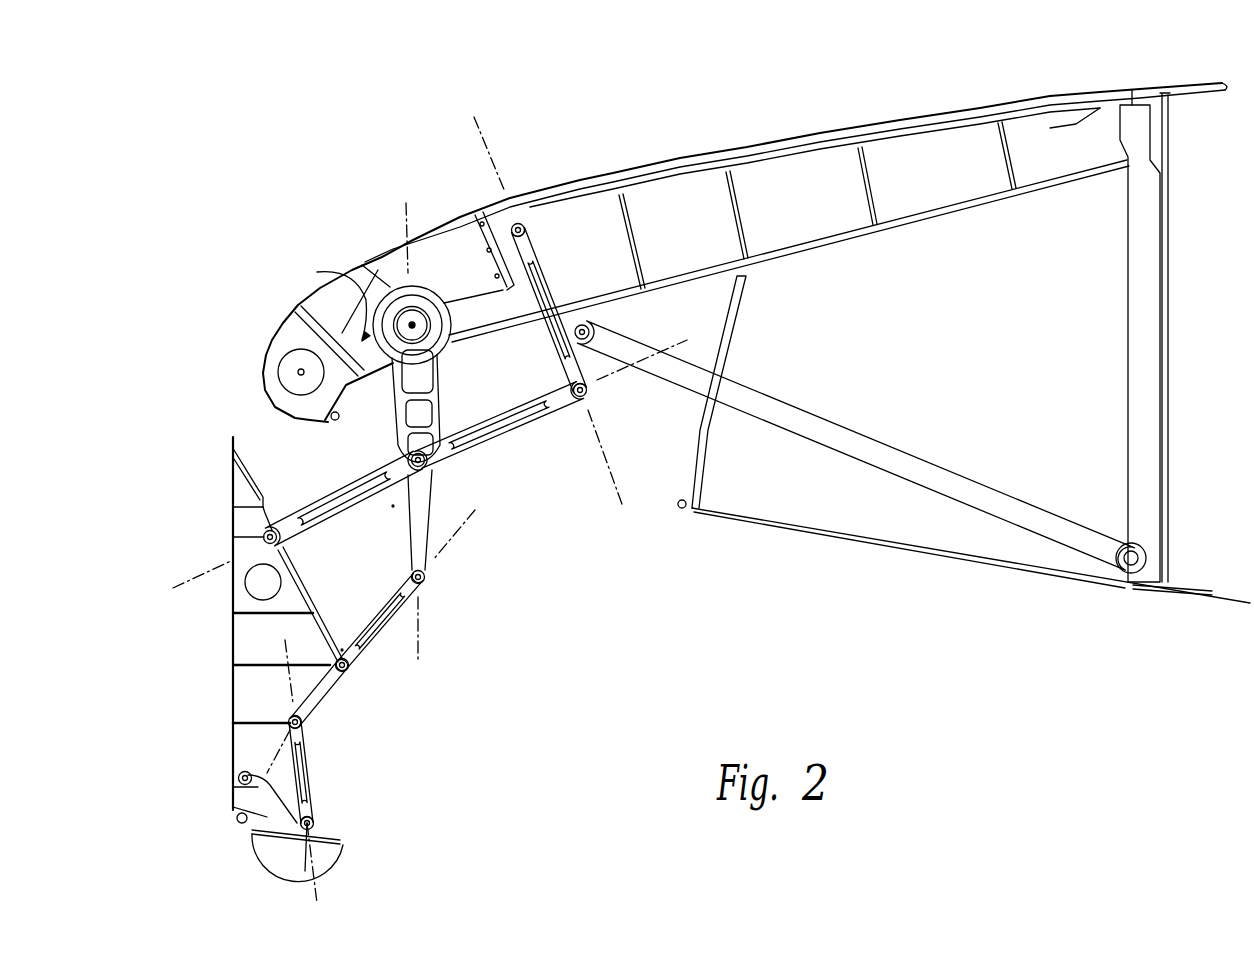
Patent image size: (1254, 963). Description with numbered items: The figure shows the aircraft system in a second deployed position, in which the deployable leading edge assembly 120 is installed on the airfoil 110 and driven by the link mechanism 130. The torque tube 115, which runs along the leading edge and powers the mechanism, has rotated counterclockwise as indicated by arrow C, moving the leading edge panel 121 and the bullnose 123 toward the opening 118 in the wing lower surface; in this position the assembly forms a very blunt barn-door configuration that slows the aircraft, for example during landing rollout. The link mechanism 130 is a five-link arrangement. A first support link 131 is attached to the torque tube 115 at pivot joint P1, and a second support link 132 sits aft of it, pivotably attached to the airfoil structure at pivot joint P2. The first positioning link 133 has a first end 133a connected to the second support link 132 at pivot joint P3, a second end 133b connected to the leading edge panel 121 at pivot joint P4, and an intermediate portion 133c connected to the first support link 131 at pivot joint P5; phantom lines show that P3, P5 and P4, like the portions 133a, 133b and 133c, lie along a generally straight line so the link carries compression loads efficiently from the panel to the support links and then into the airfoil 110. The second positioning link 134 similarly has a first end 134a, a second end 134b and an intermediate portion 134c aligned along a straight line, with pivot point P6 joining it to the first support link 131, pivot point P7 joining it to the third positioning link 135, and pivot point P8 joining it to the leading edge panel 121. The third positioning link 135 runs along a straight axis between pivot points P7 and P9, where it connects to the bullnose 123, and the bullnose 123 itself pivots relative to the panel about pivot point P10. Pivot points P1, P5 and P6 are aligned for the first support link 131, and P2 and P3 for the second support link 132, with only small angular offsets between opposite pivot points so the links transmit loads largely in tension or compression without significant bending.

The airfoil 110 is at (820, 110).
The torque tube 115 is at (360, 262).
The opening 118 is at (652, 490).
The leading edge assembly 120 is at (210, 675).
The leading edge panel 121 is at (230, 660).
The bullnose 123 is at (277, 867).
The link mechanism 130 is at (390, 513).
The first support link 131 is at (442, 393).
The second support link 132 is at (557, 287).
The first positioning link 133 is at (384, 452).
The first end 133a is at (535, 397).
The second end 133b is at (286, 527).
The intermediate portion 133c is at (393, 510).
The second positioning link 134 is at (422, 662).
The first end 134a is at (430, 600).
The second end 134b is at (318, 708).
The intermediate portion 134c is at (342, 647).
The third positioning link 135 is at (308, 790).
The arrow C is at (334, 300).
The pivot joint P1 is at (412, 325).
The pivot joint P2 is at (520, 222).
The pivot joint P3 is at (597, 397).
The pivot joint P4 is at (264, 532).
The pivot joint P5 is at (430, 470).
The pivot point P6 is at (427, 580).
The pivot point P7 is at (300, 727).
The pivot point P8 is at (347, 677).
The pivot point P9 is at (313, 820).
The pivot point P10 is at (245, 778).